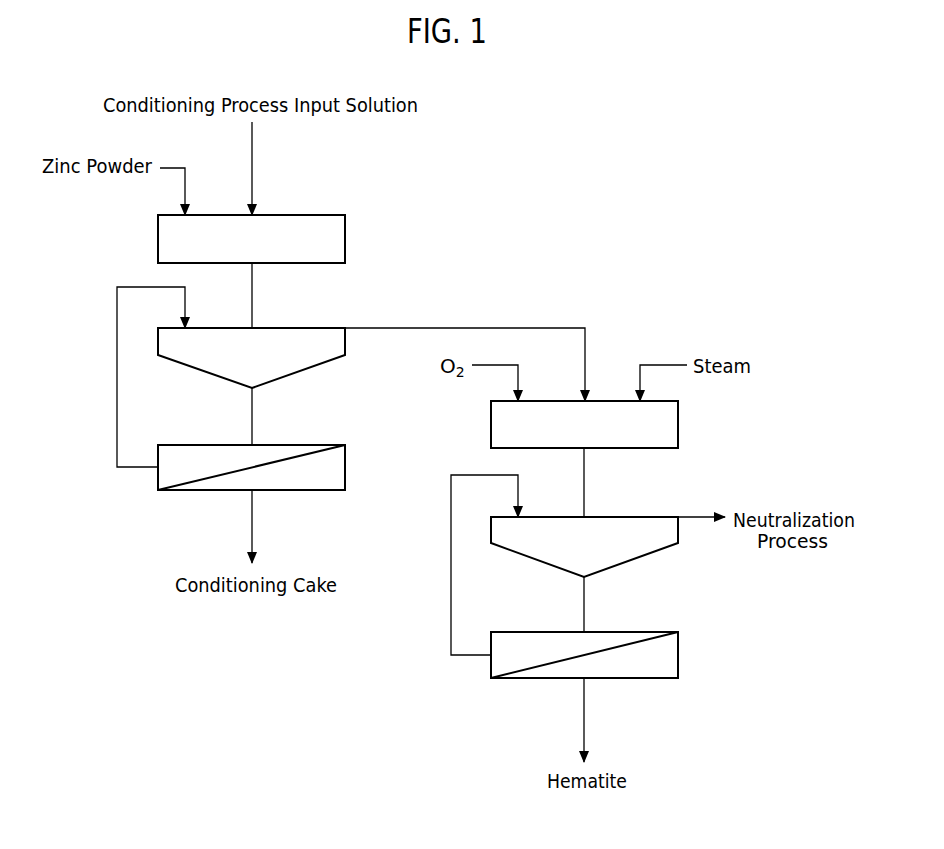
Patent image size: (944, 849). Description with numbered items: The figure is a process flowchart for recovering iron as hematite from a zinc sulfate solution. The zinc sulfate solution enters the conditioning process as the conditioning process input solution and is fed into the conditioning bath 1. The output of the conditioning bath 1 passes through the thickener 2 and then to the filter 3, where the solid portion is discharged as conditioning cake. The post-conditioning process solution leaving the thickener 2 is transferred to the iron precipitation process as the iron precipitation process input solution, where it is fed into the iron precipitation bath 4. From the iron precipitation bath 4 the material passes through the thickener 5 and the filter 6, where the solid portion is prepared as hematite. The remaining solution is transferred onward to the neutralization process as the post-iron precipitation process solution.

The conditioning bath 1 is at (302, 215).
The thickener 2 is at (303, 328).
The filter 3 is at (303, 445).
The iron precipitation bath 4 is at (678, 422).
The thickener 5 is at (633, 517).
The filter 6 is at (633, 632).